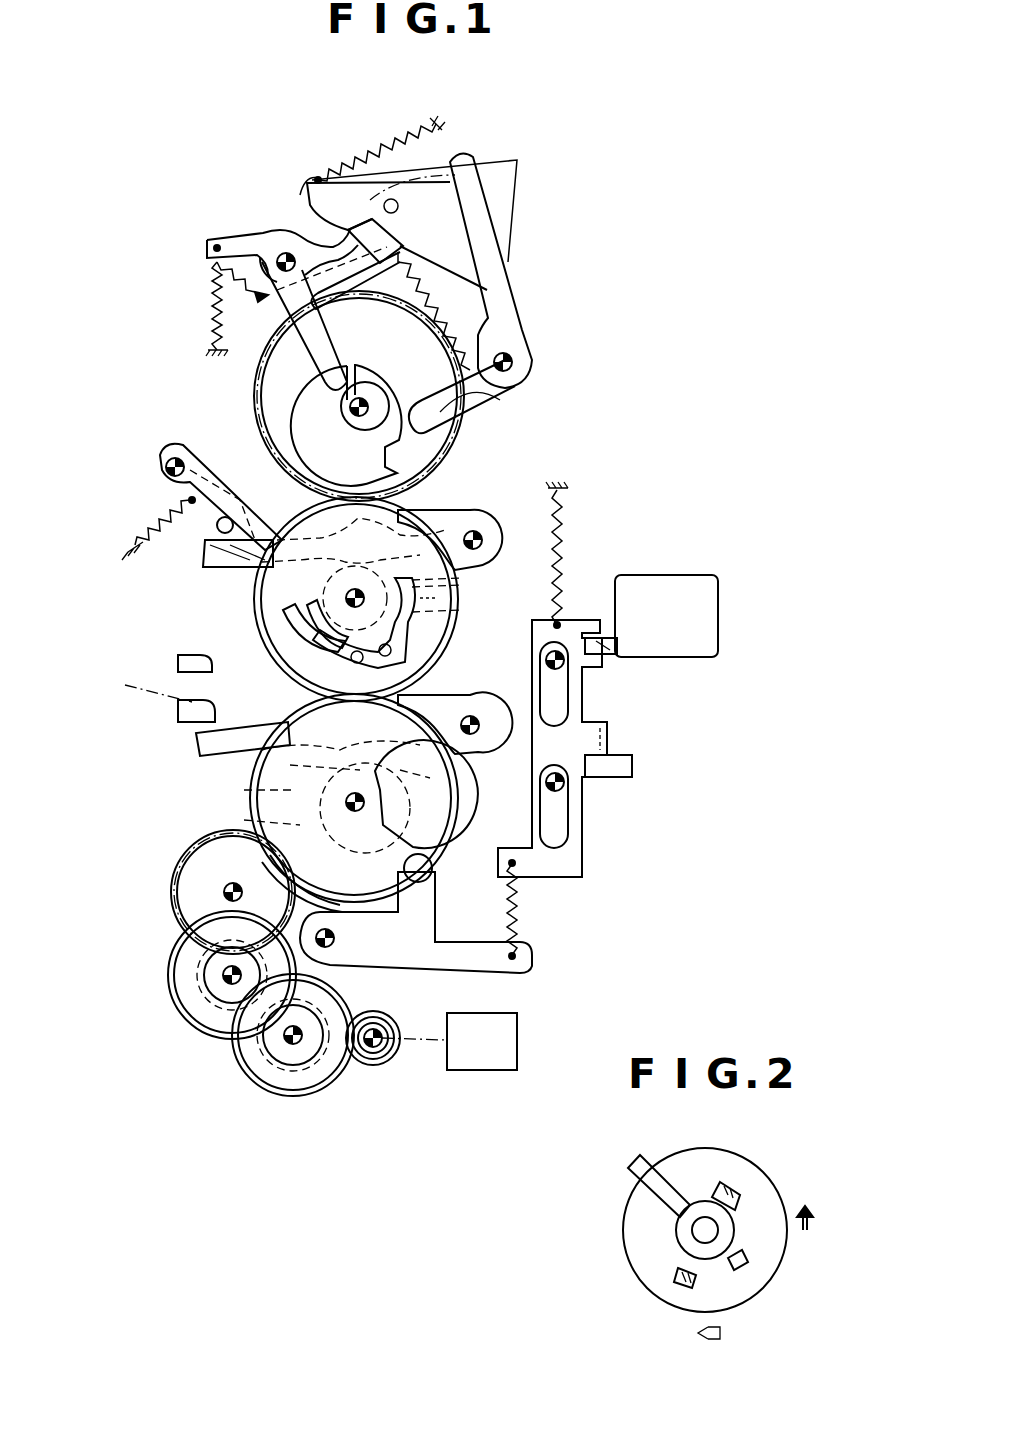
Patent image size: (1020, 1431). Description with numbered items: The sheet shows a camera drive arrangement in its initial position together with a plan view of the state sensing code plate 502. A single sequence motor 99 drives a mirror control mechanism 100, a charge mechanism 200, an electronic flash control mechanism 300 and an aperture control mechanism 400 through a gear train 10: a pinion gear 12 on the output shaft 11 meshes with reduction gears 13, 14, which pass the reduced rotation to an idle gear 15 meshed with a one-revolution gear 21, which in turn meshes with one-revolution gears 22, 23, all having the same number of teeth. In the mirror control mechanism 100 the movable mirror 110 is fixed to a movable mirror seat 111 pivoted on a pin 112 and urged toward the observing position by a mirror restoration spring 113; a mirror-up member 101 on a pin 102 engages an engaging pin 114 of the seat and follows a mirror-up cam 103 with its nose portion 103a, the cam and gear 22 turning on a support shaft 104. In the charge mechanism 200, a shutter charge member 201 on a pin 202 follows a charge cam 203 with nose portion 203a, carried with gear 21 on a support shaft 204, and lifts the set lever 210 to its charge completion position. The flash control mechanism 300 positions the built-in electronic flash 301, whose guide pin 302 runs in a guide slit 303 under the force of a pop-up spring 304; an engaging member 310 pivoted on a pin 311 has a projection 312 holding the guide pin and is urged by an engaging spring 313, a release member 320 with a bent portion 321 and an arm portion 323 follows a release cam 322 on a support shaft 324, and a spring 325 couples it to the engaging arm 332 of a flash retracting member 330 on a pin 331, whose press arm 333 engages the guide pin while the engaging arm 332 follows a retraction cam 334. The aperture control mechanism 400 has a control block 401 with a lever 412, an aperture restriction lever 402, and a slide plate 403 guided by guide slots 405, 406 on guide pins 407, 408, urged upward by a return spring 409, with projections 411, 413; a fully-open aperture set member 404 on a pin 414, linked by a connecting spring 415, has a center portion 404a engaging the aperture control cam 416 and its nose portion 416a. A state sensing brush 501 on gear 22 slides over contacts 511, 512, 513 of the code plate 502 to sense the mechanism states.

In FIG. 1, the gear train 10 is at (158, 988).
In FIG. 1, the output shaft 11 is at (378, 1050).
In FIG. 1, the pinion gear 12 is at (355, 1062).
In FIG. 1, the reduction gear 13 is at (278, 1071).
In FIG. 1, the reduction gear 14 is at (205, 1024).
In FIG. 1, the idle gear 15 is at (198, 886).
In FIG. 1, the one-revolution gear 21 is at (262, 800).
In FIG. 1, the one-revolution gear 22 is at (262, 598).
In FIG. 1, the one-revolution gear 23 is at (268, 400).
In FIG. 1, the sequence motor 99 is at (477, 1071).
In FIG. 1, the mirror control mechanism 100 is at (190, 574).
In FIG. 1, the mirror-up member 101 is at (455, 510).
In FIG. 1, the pin 102 is at (480, 534).
In FIG. 1, the mirror-up cam 103 is at (440, 611).
In FIG. 1, the nose portion 103a is at (462, 578).
In FIG. 1, the support shaft 104 is at (365, 603).
In FIG. 1, the movable mirror 110 is at (170, 478).
In FIG. 1, the movable mirror seat 111 is at (162, 505).
In FIG. 1, the pin 112 is at (166, 458).
In FIG. 1, the mirror restoration spring 113 is at (126, 548).
In FIG. 1, the engaging pin 114 is at (228, 516).
In FIG. 1, the charge mechanism 200 is at (188, 745).
In FIG. 1, the shutter charge member 201 is at (196, 734).
In FIG. 1, the pin 202 is at (474, 714).
In FIG. 1, the charge cam 203 is at (262, 786).
In FIG. 1, the nose portion 203a is at (405, 805).
In FIG. 1, the support shaft 204 is at (380, 770).
In FIG. 1, the set lever 210 is at (178, 658).
In FIG. 1, the electronic flash control mechanism 300 is at (545, 326).
In FIG. 1, the built-in electronic flash 301 is at (500, 172).
In FIG. 1, the guide pin 302 is at (345, 178).
In FIG. 1, the guide slit 303 is at (448, 165).
In FIG. 1, the pop-up spring 304 is at (375, 130).
In FIG. 1, the engaging member 310 is at (258, 240).
In FIG. 1, the pin 311 is at (284, 252).
In FIG. 1, the projection 312 is at (405, 192).
In FIG. 1, the engaging spring 313 is at (210, 308).
In FIG. 1, the release member 320 is at (216, 262).
In FIG. 1, the bent portion 321 is at (318, 182).
In FIG. 1, the release cam 322 is at (365, 375).
In FIG. 1, the arm portion 323 is at (268, 378).
In FIG. 1, the support shaft 324 is at (357, 418).
In FIG. 1, the spring 325 is at (480, 300).
In FIG. 1, the flash retracting member 330 is at (508, 243).
In FIG. 1, the pin 331 is at (514, 363).
In FIG. 1, the engaging arm 332 is at (500, 392).
In FIG. 1, the press arm 333 is at (485, 208).
In FIG. 1, the retraction cam 334 is at (500, 432).
In FIG. 1, the aperture control mechanism 400 is at (640, 724).
In FIG. 1, the control block 401 is at (712, 614).
In FIG. 1, the aperture restriction lever 402 is at (566, 786).
In FIG. 1, the slide plate 403 is at (583, 840).
In FIG. 1, the fully-open aperture set member 404 is at (500, 978).
In FIG. 1, the center portion 404a is at (514, 884).
In FIG. 1, the guide slot 405 is at (568, 692).
In FIG. 1, the guide slot 406 is at (584, 860).
In FIG. 1, the guide pin 407 is at (566, 650).
In FIG. 1, the guide pin 408 is at (575, 818).
In FIG. 1, the return spring 409 is at (578, 560).
In FIG. 1, the projection 411 is at (620, 647).
In FIG. 1, the lever 412 is at (606, 654).
In FIG. 1, the projection 413 is at (612, 745).
In FIG. 1, the pin 414 is at (335, 948).
In FIG. 1, the connecting spring 415 is at (520, 924).
In FIG. 1, the aperture control cam 416 is at (280, 824).
In FIG. 1, the nose portion 416a is at (428, 878).
In FIG. 1, the state sensing brush 501 is at (288, 630).
In FIG. 2, the state sensing code plate 502 is at (775, 1248).
In FIG. 2, the contact 511 is at (738, 1195).
In FIG. 2, the contact 512 is at (742, 1262).
In FIG. 2, the contact 513 is at (682, 1283).